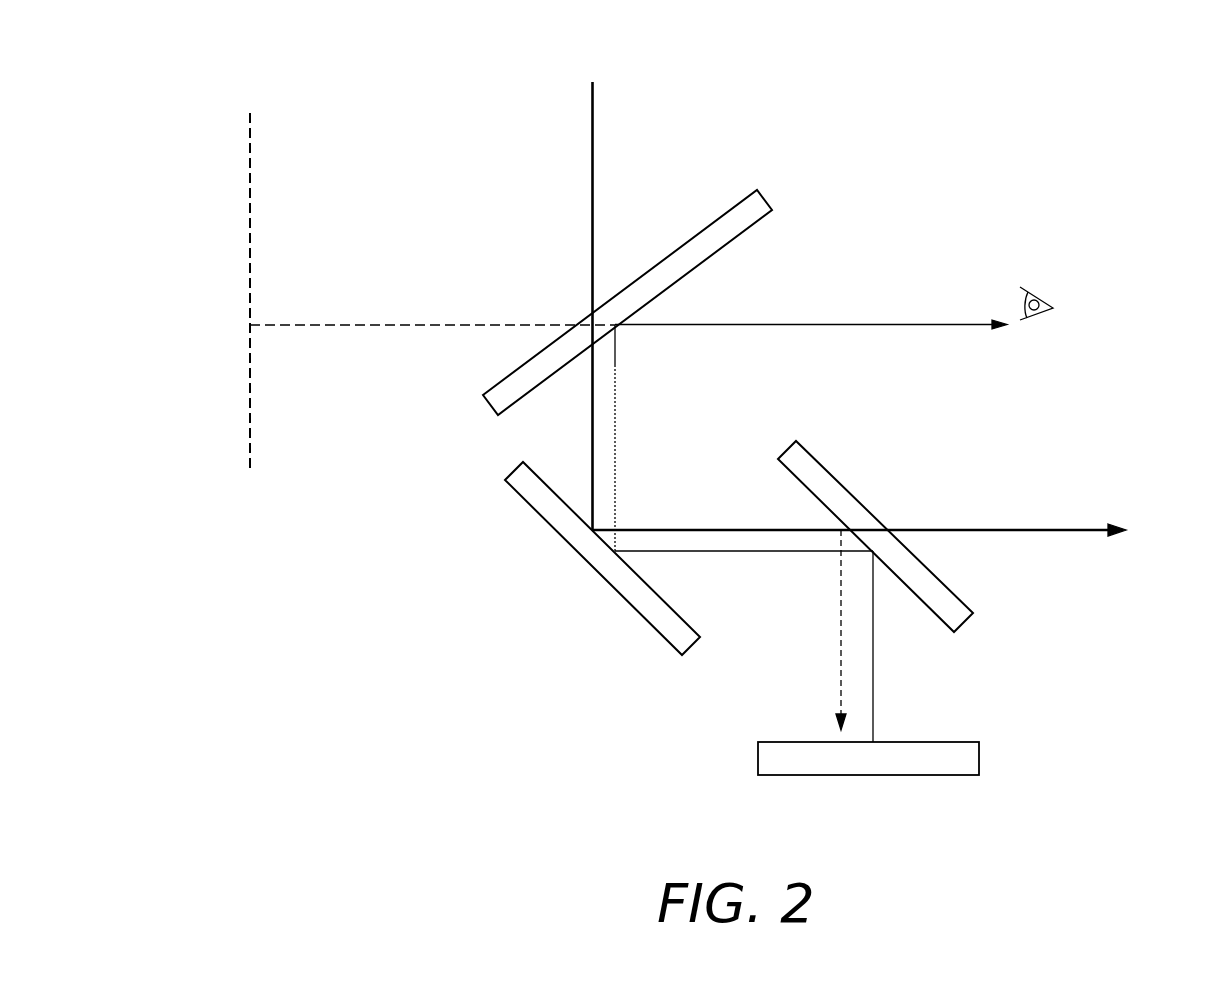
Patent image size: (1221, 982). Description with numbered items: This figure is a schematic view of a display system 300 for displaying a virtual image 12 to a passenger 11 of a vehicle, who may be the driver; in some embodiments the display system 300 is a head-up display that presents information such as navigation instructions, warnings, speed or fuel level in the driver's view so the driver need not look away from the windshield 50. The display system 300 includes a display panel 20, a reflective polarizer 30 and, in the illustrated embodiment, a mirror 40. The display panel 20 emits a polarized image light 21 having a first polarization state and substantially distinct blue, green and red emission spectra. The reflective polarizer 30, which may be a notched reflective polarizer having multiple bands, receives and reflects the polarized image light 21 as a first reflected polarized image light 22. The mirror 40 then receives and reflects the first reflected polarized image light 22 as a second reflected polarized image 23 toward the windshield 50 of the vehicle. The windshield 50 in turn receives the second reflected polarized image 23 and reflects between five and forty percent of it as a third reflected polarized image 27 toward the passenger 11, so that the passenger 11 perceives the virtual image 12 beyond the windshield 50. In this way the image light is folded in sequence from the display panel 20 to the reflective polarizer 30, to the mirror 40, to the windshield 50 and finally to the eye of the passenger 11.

The display system 300 is at (968, 40).
The passenger 11 is at (1054, 279).
The virtual image 12 is at (248, 160).
The display panel 20 is at (970, 757).
The polarized image light 21 is at (874, 688).
The first reflected polarized image light 22 is at (761, 553).
The second reflected polarized image 23 is at (616, 440).
The third reflected polarized image 27 is at (905, 326).
The reflective polarizer 30 is at (960, 617).
The mirror 40 is at (533, 495).
The windshield 50 is at (760, 200).